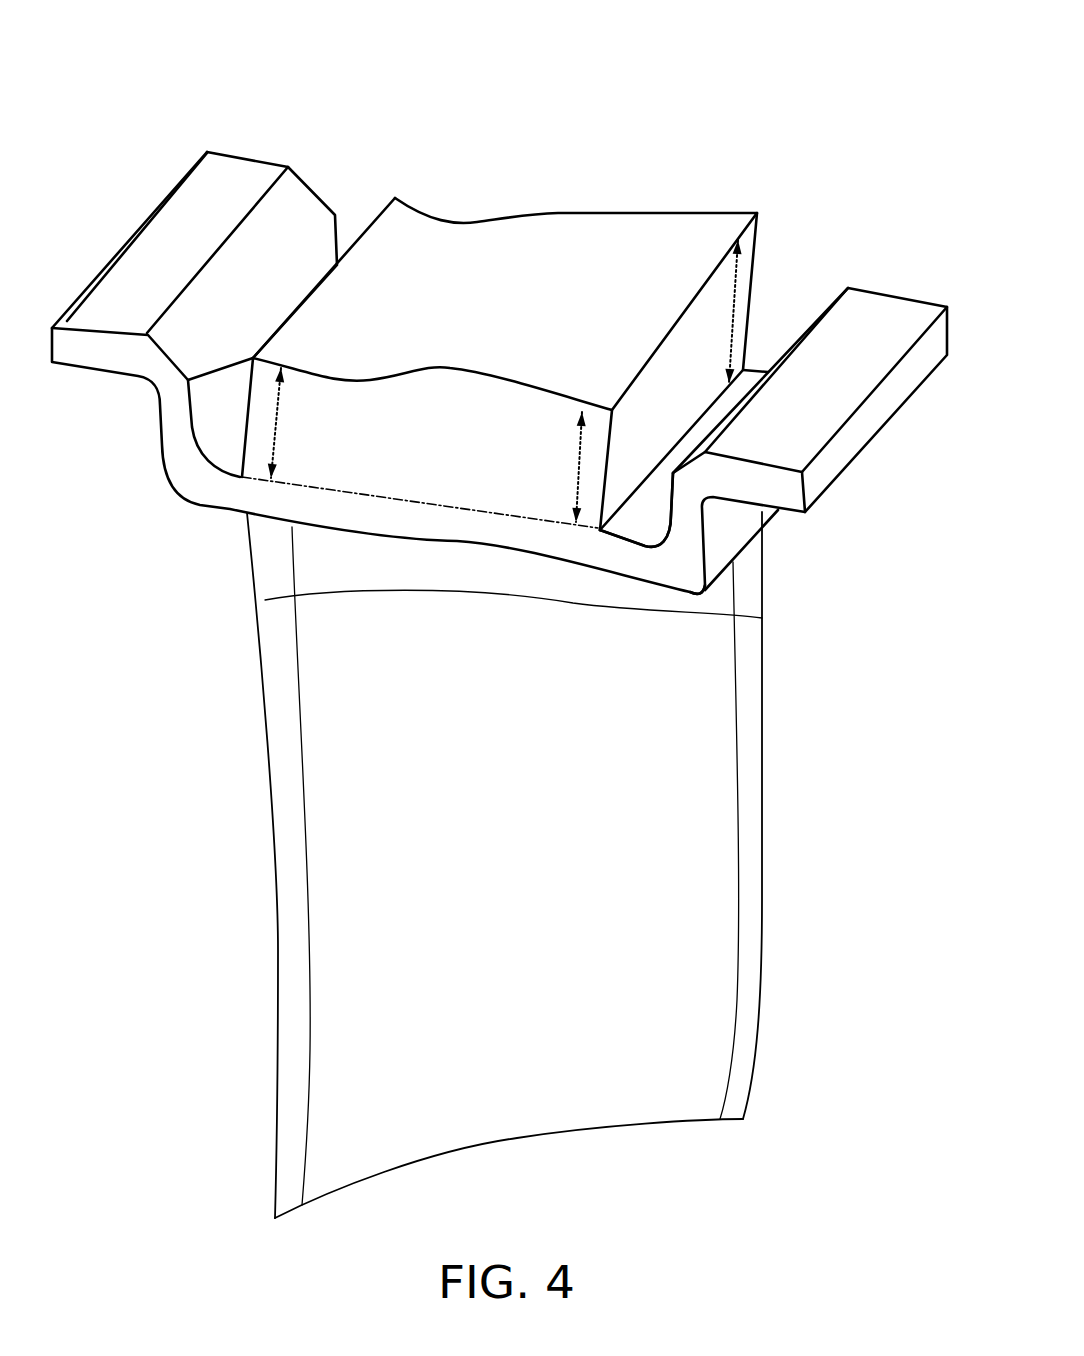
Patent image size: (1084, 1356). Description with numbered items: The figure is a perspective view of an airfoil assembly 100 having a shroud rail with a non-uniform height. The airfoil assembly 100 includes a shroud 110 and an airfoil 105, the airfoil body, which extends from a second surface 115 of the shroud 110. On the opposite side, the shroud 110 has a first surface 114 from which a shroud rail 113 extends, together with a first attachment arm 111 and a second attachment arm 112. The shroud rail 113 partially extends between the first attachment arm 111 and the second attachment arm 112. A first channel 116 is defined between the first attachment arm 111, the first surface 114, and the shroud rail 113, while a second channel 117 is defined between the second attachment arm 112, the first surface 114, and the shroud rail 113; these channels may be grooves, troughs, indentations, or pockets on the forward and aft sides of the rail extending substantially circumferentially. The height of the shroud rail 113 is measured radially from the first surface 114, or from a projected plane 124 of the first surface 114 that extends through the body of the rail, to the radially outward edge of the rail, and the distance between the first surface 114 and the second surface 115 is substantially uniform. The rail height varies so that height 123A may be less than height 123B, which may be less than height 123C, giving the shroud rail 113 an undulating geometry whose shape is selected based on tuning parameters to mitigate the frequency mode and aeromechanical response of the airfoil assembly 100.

The airfoil assembly 100 is at (136, 70).
The airfoil 105 is at (250, 870).
The shroud 110 is at (152, 458).
The first attachment arm 111 is at (245, 176).
The second attachment arm 112 is at (912, 320).
The shroud rail 113 is at (548, 228).
The first surface 114 is at (653, 525).
The second surface 115 is at (697, 600).
The first channel 116 is at (376, 192).
The second channel 117 is at (811, 239).
The height 123A is at (284, 436).
The height 123B is at (578, 468).
The height 123C is at (747, 302).
The projected plane 124 is at (400, 498).